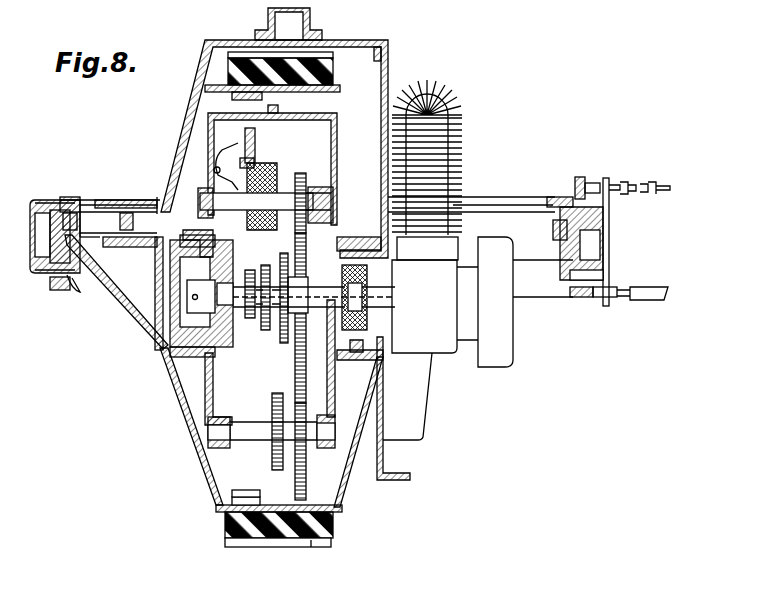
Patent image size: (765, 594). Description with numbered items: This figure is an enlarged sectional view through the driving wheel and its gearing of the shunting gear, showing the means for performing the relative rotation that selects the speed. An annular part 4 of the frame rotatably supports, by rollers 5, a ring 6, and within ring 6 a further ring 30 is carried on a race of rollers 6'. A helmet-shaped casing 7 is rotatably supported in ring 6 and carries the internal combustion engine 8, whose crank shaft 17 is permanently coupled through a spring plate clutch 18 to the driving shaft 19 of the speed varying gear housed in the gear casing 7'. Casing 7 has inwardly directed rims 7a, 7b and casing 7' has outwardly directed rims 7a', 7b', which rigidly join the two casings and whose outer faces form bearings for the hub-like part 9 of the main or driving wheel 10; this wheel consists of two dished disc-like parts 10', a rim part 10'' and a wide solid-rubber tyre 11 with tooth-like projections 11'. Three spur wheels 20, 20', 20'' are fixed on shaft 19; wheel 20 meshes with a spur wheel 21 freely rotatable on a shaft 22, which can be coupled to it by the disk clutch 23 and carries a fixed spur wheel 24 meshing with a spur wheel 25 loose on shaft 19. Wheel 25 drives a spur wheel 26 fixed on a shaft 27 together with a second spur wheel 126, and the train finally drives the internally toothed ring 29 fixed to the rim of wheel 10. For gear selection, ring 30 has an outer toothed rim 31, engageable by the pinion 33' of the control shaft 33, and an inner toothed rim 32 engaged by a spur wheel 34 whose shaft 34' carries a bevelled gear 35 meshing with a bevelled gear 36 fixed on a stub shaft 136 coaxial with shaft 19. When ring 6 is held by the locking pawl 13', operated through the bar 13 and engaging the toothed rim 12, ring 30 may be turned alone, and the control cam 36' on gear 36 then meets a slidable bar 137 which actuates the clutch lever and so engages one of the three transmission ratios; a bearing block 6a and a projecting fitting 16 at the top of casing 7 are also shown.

The annular part 4 is at (32, 228).
The rollers 5 is at (32, 246).
The ring 6 is at (312, 269).
The race of rollers 6' is at (293, 208).
The bearing block 6a is at (120, 222).
The helmet-shaped casing 7 is at (274, 149).
The gear casing 7' is at (284, 156).
The inwardly directed rim 7a is at (116, 317).
The outwardly directed rim 7a' is at (170, 252).
The inwardly directed rim 7b is at (424, 248).
The outwardly directed rim 7b' is at (478, 338).
The internal combustion engine 8 is at (440, 113).
The hub-like part 9 is at (318, 52).
The main or driving wheel 10 is at (291, 515).
The dished disc-like parts 10' is at (285, 403).
The rim part 10'' is at (259, 498).
The elastic tyre 11 is at (260, 546).
The tooth-like projections 11' is at (338, 543).
The toothed rim 12 is at (60, 290).
The operating bar 13 is at (642, 309).
The locking pawl 13' is at (601, 309).
The nipple 16 is at (310, 26).
The crank shaft 17 is at (314, 300).
The clutch 18 is at (363, 292).
The driving shaft 19 is at (240, 340).
The spur wheel 20 is at (251, 309).
The spur wheel 20' is at (267, 315).
The spur wheel 20'' is at (278, 317).
The spur wheel 21 is at (255, 142).
The shaft 22 is at (326, 202).
The clutch 23 is at (272, 178).
The spur wheel 24 is at (302, 176).
The spur wheel 25 is at (309, 318).
The spur wheel 26 is at (308, 476).
The shaft 27 is at (310, 436).
The internally toothed ring 29 is at (246, 495).
The ring 30 is at (85, 198).
The outer toothed rim 31 is at (558, 196).
The inner toothed rim 32 is at (100, 200).
The control shaft 33 is at (636, 223).
The pinion 33' is at (593, 177).
The spur wheel 34 is at (126, 185).
The shaft 34' is at (92, 265).
The bevelled gear 35 is at (122, 247).
The bevelled gear 36 is at (146, 293).
The control cam 36' is at (162, 192).
The spur wheel 126 is at (272, 408).
The stub shaft 136 is at (187, 300).
The bar 137 is at (272, 265).